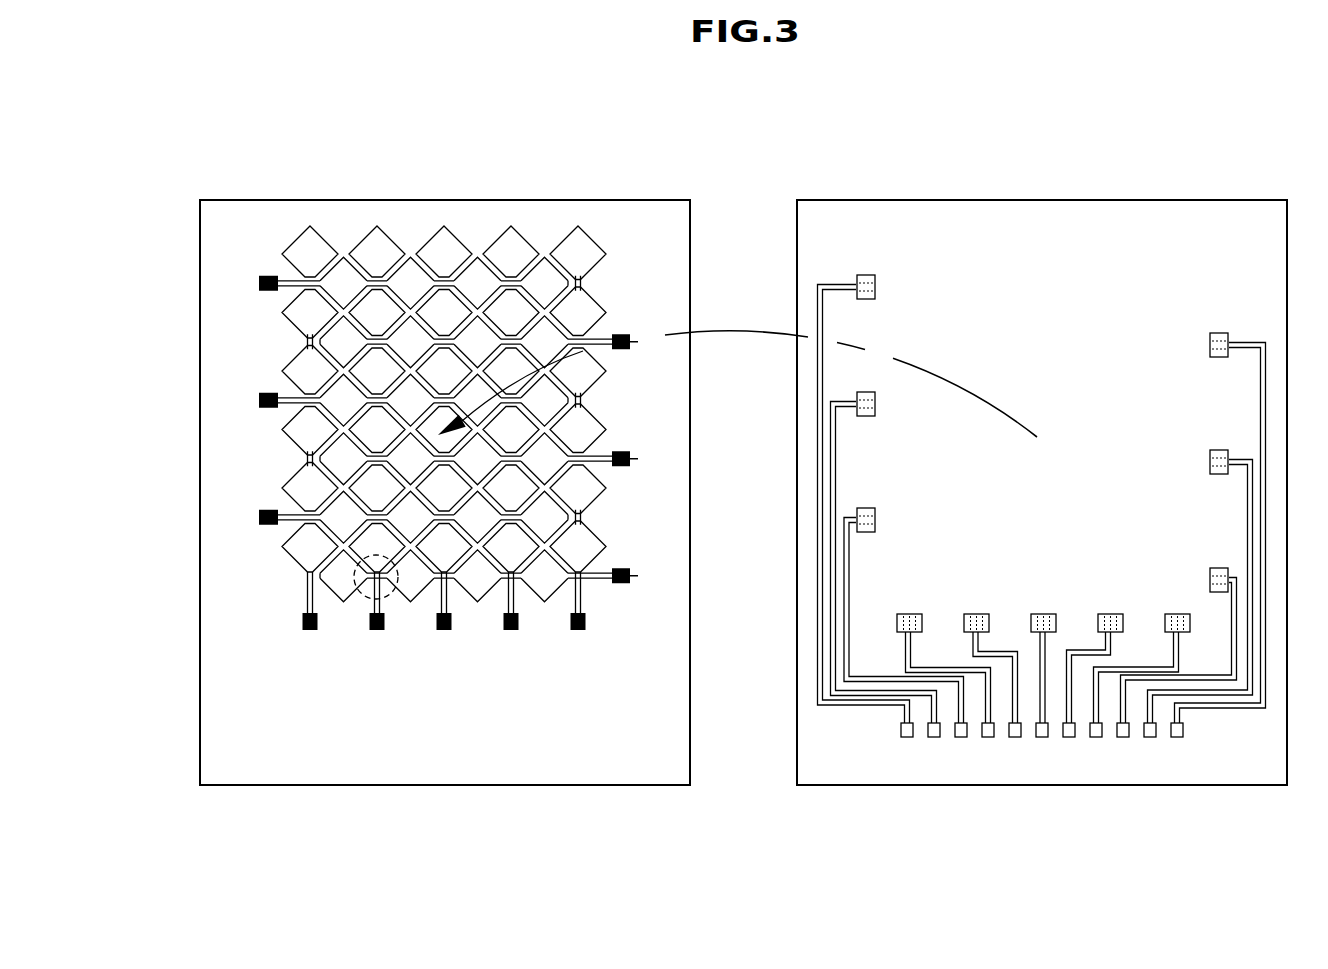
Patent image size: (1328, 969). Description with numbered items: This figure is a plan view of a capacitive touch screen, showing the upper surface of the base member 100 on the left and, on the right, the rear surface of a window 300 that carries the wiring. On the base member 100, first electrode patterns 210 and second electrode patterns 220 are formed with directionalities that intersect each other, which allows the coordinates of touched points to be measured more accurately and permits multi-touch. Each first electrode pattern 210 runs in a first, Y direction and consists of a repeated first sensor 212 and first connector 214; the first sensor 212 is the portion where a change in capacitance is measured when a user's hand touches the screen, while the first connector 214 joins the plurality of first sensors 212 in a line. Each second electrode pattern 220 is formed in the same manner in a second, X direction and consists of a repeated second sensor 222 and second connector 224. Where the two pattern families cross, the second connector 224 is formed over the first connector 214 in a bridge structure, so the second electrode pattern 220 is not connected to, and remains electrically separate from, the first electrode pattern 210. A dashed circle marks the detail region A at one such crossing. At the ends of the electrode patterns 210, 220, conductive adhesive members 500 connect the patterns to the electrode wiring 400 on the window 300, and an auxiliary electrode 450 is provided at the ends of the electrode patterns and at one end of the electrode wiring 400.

The base member 100 is at (450, 208).
The first electrode pattern 210 is at (472, 356).
The first sensor 212 is at (592, 250).
The first connector 214 is at (580, 343).
The second electrode pattern 220 is at (445, 572).
The second sensor 222 is at (480, 588).
The second connector 224 is at (456, 583).
The flexible printed circuit board 300 is at (955, 212).
The electrode wiring 400 is at (838, 287).
The auxiliary electrode 450 is at (868, 275).
The conductive adhesive member 500 is at (259, 400).
The enlarged detail region A is at (390, 597).